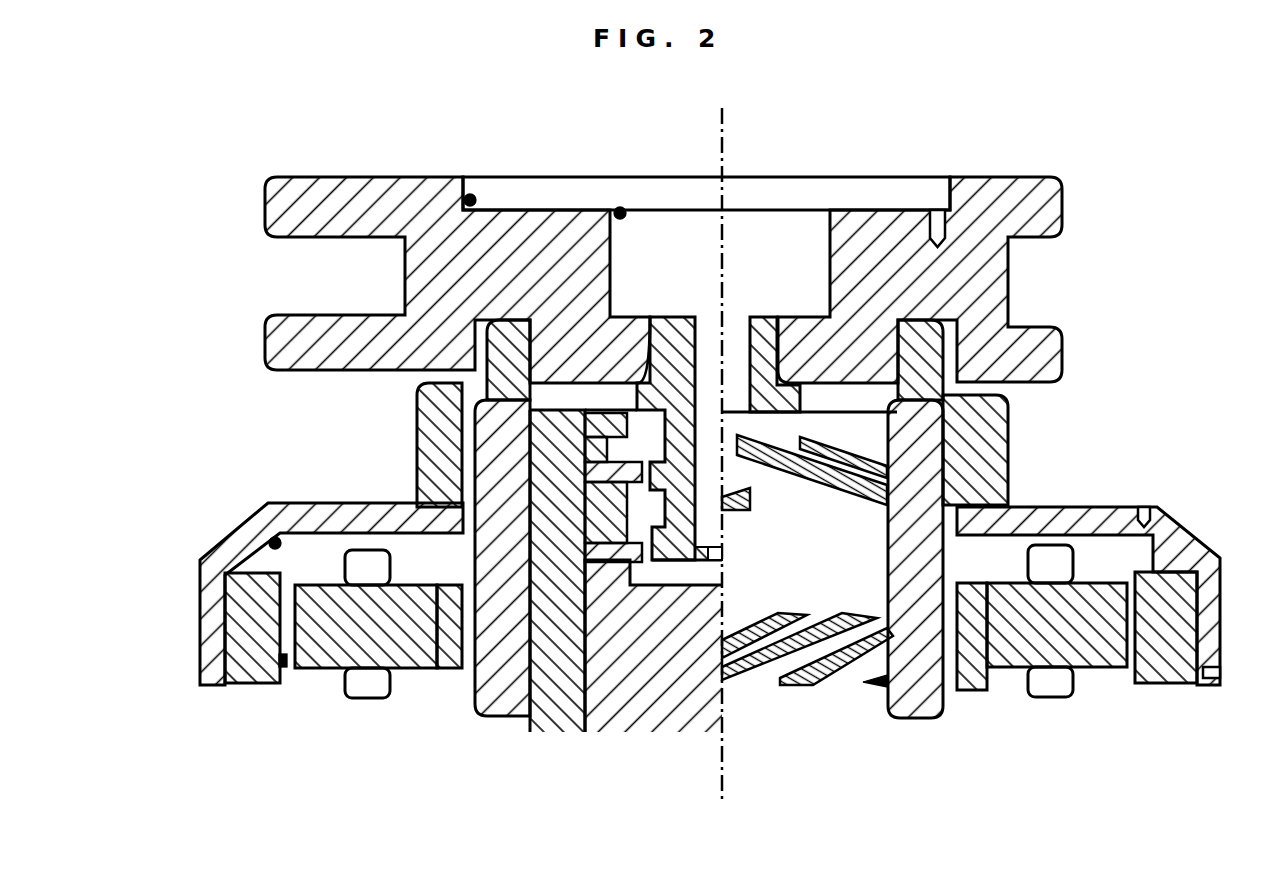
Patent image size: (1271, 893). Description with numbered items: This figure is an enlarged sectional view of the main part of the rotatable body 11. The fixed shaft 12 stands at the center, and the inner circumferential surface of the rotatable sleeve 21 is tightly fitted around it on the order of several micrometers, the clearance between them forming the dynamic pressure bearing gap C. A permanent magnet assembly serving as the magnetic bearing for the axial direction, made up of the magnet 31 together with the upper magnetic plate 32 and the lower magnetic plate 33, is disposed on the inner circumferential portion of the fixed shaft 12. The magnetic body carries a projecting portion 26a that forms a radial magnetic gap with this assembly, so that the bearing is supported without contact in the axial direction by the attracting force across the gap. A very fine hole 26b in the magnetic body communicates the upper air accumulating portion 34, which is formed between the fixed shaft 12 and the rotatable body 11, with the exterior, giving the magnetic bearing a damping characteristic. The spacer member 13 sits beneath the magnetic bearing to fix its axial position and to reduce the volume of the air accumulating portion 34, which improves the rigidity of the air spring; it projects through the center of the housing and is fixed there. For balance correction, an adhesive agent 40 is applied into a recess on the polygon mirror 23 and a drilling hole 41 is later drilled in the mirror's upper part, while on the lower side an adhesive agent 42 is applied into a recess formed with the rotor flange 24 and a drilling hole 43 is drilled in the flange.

The rotatable body 11 is at (1040, 274).
The fixed shaft 12 is at (863, 684).
The spacer member 13 is at (627, 710).
The rotatable sleeve 21 is at (946, 716).
The polygon mirror 23 is at (1008, 305).
The rotor flange 24 is at (1096, 507).
The projecting portion 26a is at (698, 514).
The very fine hole 26b is at (712, 556).
The magnet 31 is at (603, 513).
The upper magnetic plate 32 is at (600, 468).
The lower magnetic plate 33 is at (600, 562).
The upper air accumulating portion 34 is at (634, 434).
The adhesive agent 40 is at (618, 207).
The drilling hole 41 is at (938, 208).
The adhesive agent 42 is at (270, 546).
The drilling hole 43 is at (1214, 672).
The dynamic pressure bearing gap C is at (903, 733).